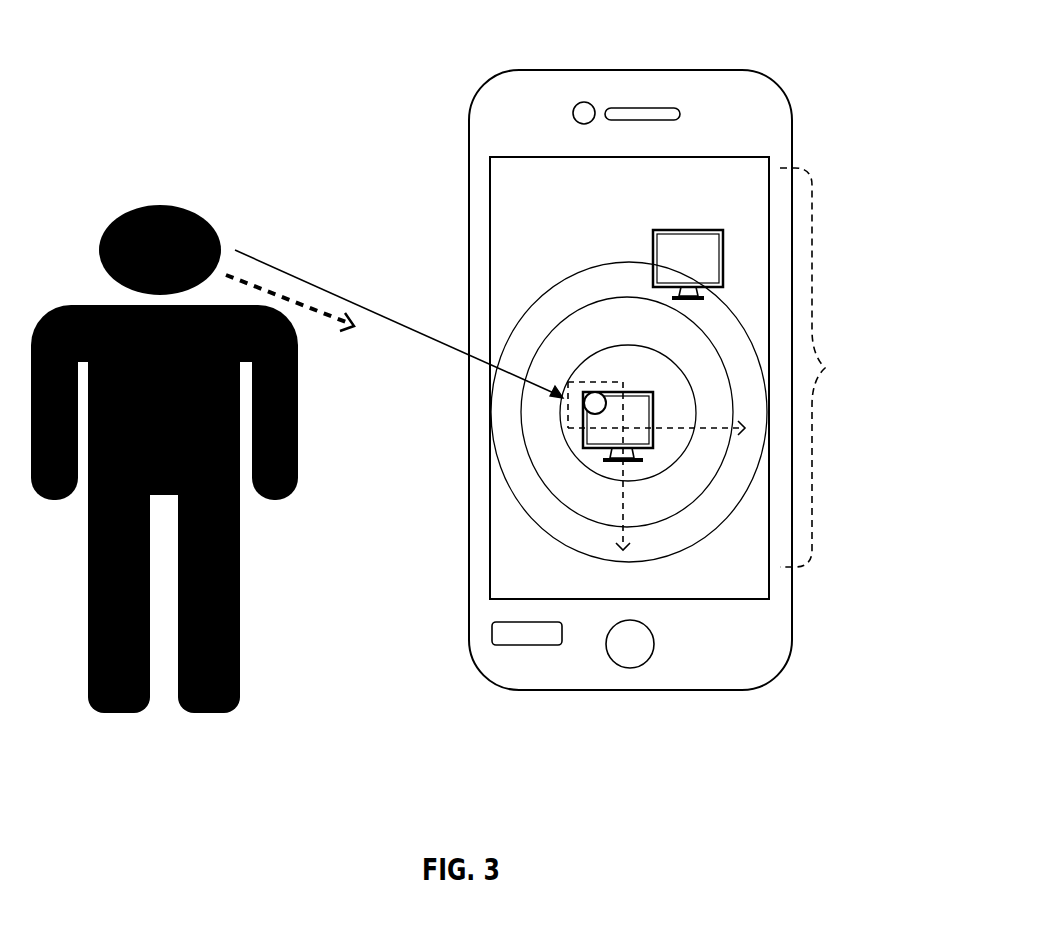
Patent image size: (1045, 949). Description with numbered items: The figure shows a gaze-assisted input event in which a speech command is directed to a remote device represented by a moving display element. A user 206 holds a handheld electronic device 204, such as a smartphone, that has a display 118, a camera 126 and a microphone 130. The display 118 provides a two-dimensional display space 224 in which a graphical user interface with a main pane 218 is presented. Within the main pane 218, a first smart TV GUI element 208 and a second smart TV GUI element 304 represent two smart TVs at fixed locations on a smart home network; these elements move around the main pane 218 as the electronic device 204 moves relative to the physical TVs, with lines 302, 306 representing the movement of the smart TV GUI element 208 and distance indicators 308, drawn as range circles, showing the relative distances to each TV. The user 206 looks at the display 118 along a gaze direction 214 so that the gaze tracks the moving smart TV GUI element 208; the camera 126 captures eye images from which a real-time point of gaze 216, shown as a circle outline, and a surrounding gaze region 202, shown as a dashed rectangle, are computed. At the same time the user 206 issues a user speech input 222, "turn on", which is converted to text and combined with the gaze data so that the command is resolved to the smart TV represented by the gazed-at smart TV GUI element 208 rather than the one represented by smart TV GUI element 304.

The display 118 is at (553, 224).
The camera 126 is at (578, 103).
The microphone 130 is at (490, 628).
The gaze region 202 is at (565, 410).
The electronic device 204 is at (469, 210).
The user 206 is at (184, 756).
The smart TV GUI element 208 is at (638, 432).
The gaze direction 214 is at (275, 268).
The point of gaze 216 is at (608, 403).
The main pane 218 is at (697, 199).
The user speech input 222 is at (333, 320).
The display space 224 is at (825, 368).
The line 302 is at (693, 433).
The smart TV GUI element 304 is at (709, 274).
The line 306 is at (620, 508).
The distance indicators 308 is at (505, 485).